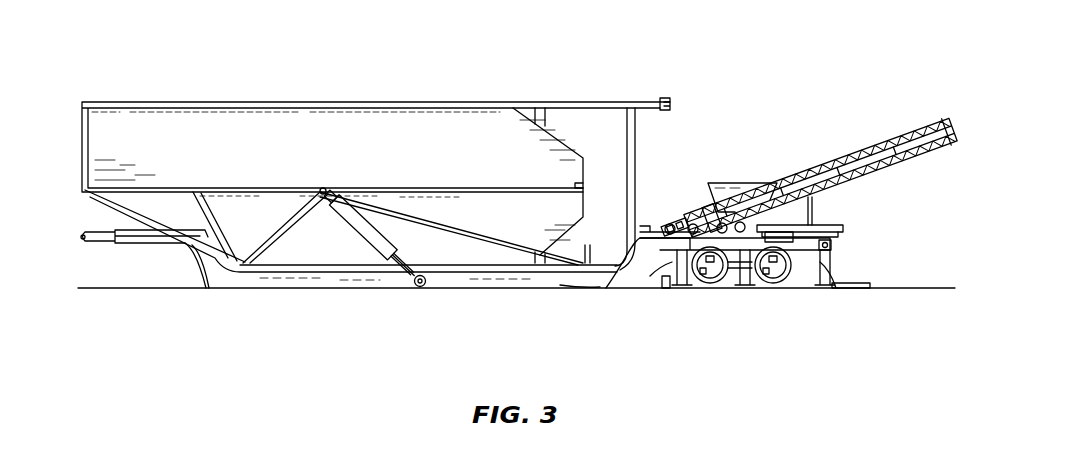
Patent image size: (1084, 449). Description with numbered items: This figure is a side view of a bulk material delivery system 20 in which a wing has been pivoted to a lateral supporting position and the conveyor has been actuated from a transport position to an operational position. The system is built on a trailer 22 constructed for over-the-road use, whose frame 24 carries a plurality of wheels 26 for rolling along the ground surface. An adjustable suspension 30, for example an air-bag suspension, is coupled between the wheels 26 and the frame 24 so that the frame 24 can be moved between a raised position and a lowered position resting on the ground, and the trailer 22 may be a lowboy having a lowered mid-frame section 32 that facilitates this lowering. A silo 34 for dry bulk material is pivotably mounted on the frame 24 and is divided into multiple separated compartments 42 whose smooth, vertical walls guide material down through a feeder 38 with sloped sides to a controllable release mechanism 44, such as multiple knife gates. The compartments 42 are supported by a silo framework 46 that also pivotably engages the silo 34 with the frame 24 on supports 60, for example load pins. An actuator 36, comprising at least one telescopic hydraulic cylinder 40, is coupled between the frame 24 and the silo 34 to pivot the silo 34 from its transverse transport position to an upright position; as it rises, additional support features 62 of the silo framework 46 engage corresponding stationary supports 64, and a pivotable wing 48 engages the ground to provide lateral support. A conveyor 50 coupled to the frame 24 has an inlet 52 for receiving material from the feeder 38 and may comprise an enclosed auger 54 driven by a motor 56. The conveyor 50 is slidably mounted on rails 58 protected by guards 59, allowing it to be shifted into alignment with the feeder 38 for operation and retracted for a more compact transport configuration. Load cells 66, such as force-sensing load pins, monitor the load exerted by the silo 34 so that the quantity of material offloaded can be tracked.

The bulk material delivery system 20 is at (160, 46).
The trailer 22 is at (190, 262).
The frame 24 is at (499, 290).
The wheels 26 is at (695, 285).
The adjustable suspension 30 is at (745, 290).
The lowered mid-frame section 32 is at (448, 290).
The silo 34 is at (349, 138).
The actuator 36 is at (338, 228).
The feeder 38 is at (552, 131).
The telescopic hydraulic cylinder 40 is at (359, 253).
The compartments 42 is at (472, 212).
The controllable release mechanism 44 is at (586, 160).
The silo framework 46 is at (90, 205).
The wing 48 is at (862, 291).
The conveyor 50 is at (884, 171).
The inlet 52 is at (740, 182).
The auger 54 is at (897, 136).
The motor 56 is at (680, 220).
The rails 58 is at (647, 226).
The guards 59 is at (667, 222).
The supports 60 is at (627, 278).
The support features 62 is at (668, 100).
The stationary supports 64 is at (833, 245).
The load cells 66 is at (568, 290).